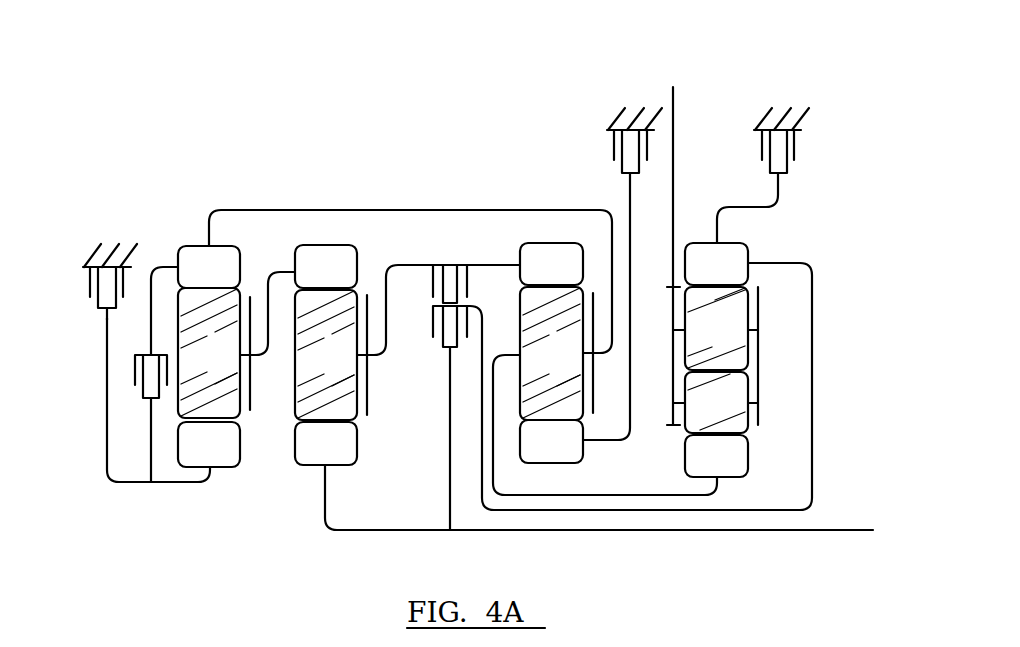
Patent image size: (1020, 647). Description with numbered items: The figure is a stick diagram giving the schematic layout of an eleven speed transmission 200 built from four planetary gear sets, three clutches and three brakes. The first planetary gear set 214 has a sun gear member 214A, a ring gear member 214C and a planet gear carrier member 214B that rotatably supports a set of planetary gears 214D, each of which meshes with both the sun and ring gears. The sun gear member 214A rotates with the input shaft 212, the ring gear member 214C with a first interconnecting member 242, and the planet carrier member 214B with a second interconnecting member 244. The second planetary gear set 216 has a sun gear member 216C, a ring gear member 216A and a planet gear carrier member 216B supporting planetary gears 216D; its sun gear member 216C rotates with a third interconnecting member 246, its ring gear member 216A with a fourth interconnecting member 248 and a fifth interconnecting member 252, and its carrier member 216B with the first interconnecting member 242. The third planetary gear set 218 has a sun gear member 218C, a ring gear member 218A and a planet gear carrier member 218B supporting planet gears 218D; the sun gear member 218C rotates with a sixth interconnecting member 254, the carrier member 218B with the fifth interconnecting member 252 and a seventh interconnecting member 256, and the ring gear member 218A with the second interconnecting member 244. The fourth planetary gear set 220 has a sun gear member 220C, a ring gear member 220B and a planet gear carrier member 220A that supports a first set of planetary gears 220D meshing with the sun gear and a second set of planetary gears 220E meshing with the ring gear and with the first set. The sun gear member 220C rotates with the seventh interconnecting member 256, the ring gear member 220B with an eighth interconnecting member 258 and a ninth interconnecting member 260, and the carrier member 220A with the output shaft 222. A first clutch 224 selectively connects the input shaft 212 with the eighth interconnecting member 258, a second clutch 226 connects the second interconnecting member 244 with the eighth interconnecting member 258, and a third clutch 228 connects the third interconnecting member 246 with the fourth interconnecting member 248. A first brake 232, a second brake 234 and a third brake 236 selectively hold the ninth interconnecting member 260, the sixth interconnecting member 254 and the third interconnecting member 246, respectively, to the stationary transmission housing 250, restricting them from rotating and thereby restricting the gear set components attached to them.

The eleven speed transmission 200 is at (778, 80).
The input shaft or member 212 is at (841, 533).
The first planetary gear set 214 is at (352, 404).
The sun gear member 214A is at (326, 443).
The planet gear carrier member 214B is at (371, 406).
The ring gear member 214C is at (326, 266).
The planetary gears 214D is at (326, 355).
The second planetary gear set 216 is at (230, 404).
The ring gear member 216A is at (209, 267).
The planet gear carrier member 216B is at (253, 411).
The sun gear member 216C is at (209, 444).
The planetary gears 216D is at (209, 353).
The third planetary gear set 218 is at (593, 406).
The ring gear member 218A is at (551, 264).
The planet gear carrier member 218B is at (593, 397).
The sun gear member 218C is at (551, 441).
The planet gears 218D is at (551, 353).
The fourth planetary gear set 220 is at (781, 406).
The planet gear carrier member 220A is at (760, 355).
The ring gear member 220B is at (716, 264).
The sun gear member 220C is at (716, 456).
The first set of planetary gears 220D is at (716, 402).
The second set of planetary gears 220E is at (716, 328).
The output shaft or member 222 is at (676, 110).
The first clutch 224 is at (438, 348).
The second clutch 226 is at (432, 281).
The third clutch 228 is at (134, 369).
The first brake 232 is at (795, 143).
The second brake 234 is at (614, 144).
The third brake 236 is at (90, 288).
The first shaft or interconnecting member 242 is at (273, 268).
The second shaft or interconnecting member 244 is at (487, 265).
The third shaft or interconnecting member 246 is at (107, 416).
The fourth shaft or interconnecting member 248 is at (163, 266).
The transmission housing 250 is at (95, 252).
The fifth shaft or interconnecting member 252 is at (320, 209).
The sixth shaft or interconnecting member 254 is at (629, 204).
The seventh shaft or interconnecting member 256 is at (657, 497).
The eighth shaft or interconnecting member 258 is at (813, 425).
The ninth shaft or interconnecting member 260 is at (779, 190).